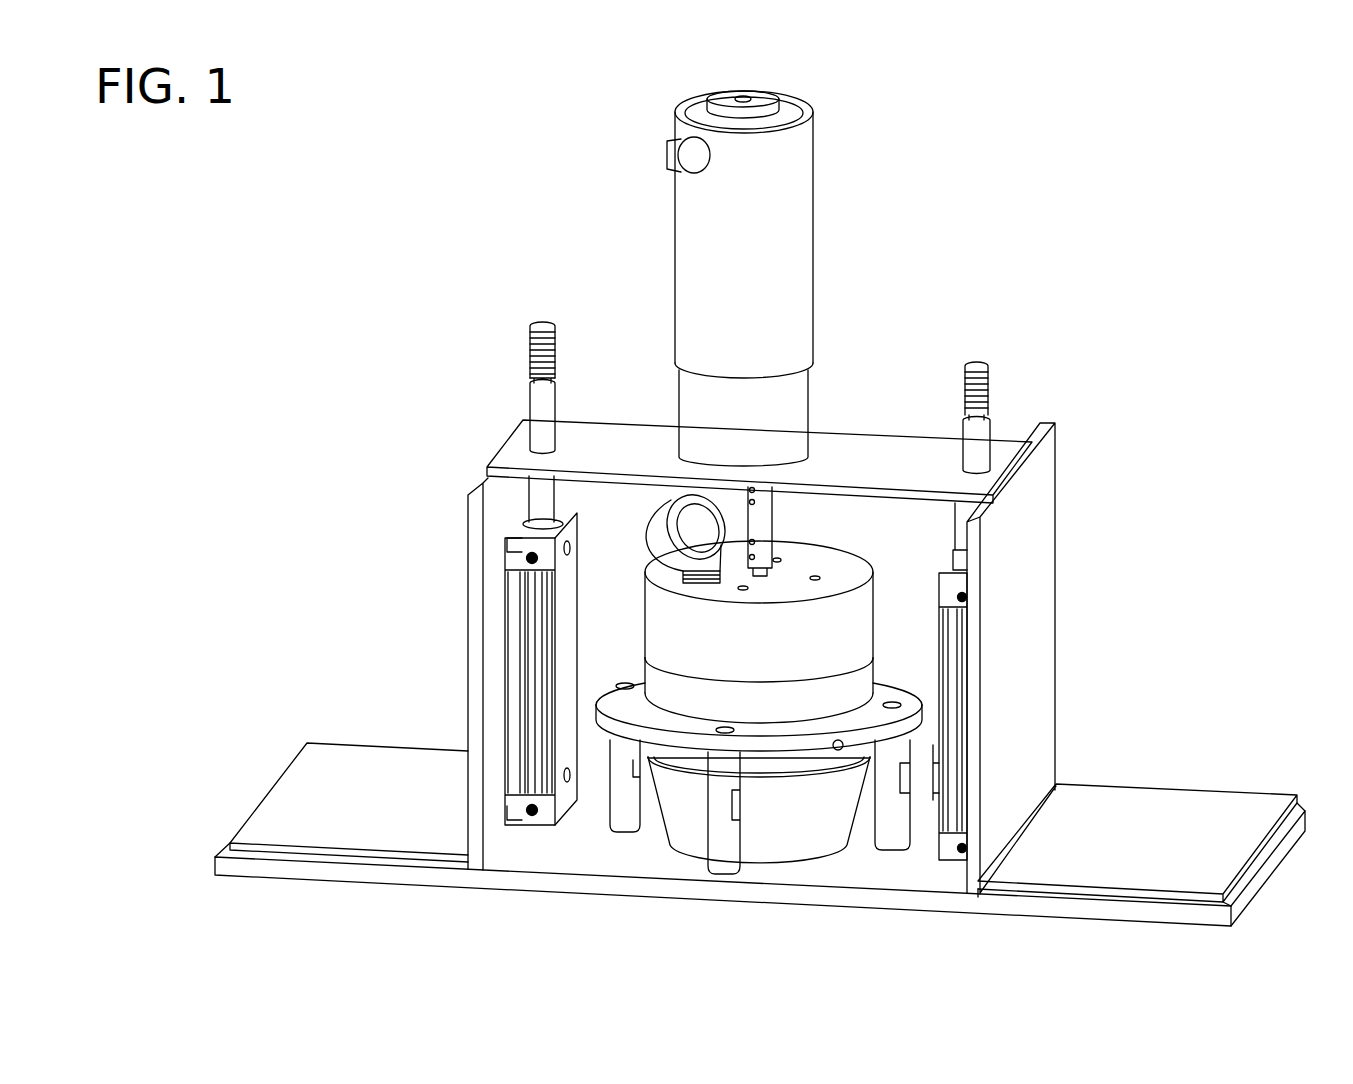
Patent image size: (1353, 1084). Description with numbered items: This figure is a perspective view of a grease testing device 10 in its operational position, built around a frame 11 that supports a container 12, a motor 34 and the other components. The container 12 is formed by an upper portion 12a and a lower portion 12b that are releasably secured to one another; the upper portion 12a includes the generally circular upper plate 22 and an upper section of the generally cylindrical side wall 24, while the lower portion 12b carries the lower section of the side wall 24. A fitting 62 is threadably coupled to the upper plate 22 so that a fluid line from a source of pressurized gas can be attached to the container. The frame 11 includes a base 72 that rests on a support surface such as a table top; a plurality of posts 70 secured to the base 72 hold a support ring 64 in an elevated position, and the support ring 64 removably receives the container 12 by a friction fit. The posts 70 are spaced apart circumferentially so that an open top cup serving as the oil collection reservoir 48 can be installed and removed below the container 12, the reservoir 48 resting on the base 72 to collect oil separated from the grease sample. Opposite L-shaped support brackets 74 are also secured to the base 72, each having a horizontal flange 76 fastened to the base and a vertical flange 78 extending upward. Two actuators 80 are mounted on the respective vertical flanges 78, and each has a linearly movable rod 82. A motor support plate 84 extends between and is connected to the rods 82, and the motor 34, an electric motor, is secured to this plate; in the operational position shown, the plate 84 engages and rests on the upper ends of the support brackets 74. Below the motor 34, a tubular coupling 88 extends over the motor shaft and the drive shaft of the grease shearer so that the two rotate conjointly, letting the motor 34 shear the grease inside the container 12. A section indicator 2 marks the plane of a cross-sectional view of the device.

The section line for FIG. 2 is at (792, 73).
The grease testing device 10 is at (1212, 165).
The frame 11 is at (1150, 523).
The container 12 is at (866, 551).
The upper portion 12a is at (641, 607).
The lower portion 12b is at (641, 676).
The upper plate 22 is at (812, 563).
The side wall 24 is at (857, 611).
The motor 34 is at (797, 229).
The oil collection reservoir 48 is at (843, 850).
The fitting 62 is at (660, 507).
The support ring 64 is at (893, 684).
The posts 70 is at (630, 837).
The base 72 is at (1062, 921).
The support brackets 74 is at (357, 768).
The horizontal flange 76 is at (293, 803).
The vertical flange 78 is at (470, 590).
The actuators 80 is at (522, 830).
The linearly movable rod 82 is at (540, 407).
The motor support plate 84 is at (868, 447).
The coupling 88 is at (781, 516).